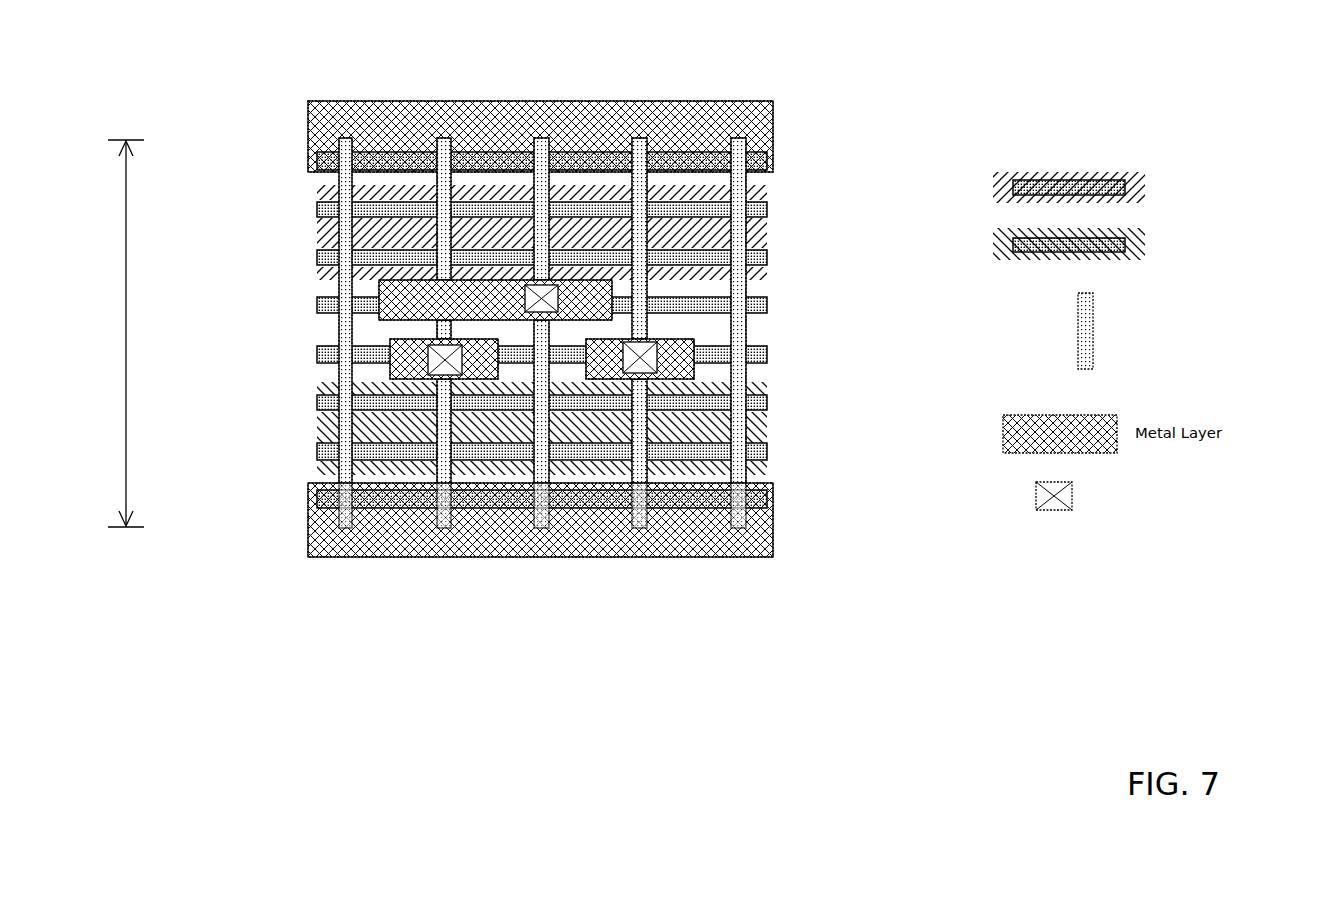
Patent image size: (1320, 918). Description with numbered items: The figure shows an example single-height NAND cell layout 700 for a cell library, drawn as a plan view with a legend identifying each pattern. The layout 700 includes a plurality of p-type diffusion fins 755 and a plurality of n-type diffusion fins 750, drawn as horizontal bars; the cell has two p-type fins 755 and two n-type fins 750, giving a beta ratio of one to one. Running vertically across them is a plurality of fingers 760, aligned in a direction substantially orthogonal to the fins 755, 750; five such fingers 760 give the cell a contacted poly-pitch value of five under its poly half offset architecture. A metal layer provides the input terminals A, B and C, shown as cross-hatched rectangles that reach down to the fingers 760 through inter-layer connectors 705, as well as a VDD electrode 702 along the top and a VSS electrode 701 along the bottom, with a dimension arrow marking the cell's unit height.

The single-height NAND cell layout 700 is at (908, 29).
The VDD electrode 702 is at (306, 127).
The VSS electrode 701 is at (310, 530).
The p-type fins 755 is at (1138, 187).
The n-type fins 750 is at (1138, 244).
The fingers 760 is at (1132, 331).
The inter-layer connector 705 is at (1159, 496).